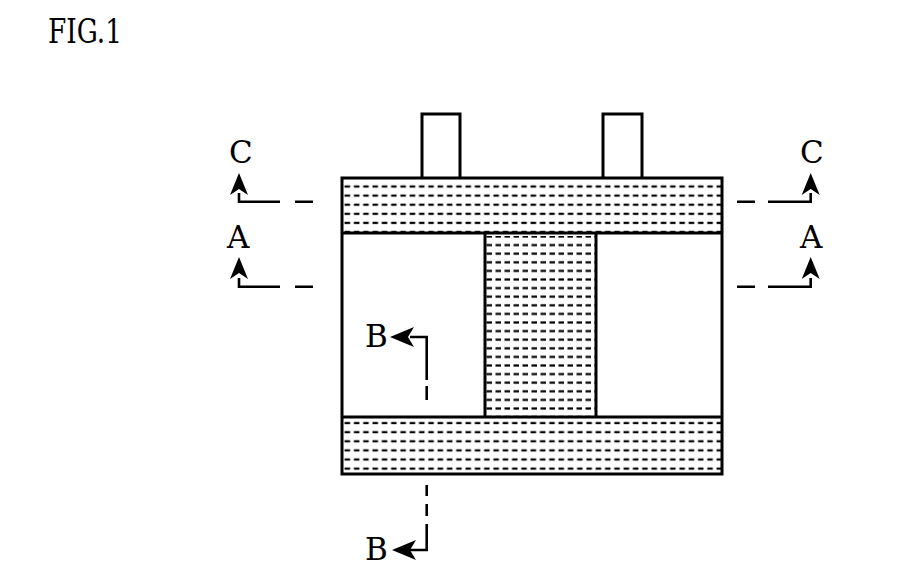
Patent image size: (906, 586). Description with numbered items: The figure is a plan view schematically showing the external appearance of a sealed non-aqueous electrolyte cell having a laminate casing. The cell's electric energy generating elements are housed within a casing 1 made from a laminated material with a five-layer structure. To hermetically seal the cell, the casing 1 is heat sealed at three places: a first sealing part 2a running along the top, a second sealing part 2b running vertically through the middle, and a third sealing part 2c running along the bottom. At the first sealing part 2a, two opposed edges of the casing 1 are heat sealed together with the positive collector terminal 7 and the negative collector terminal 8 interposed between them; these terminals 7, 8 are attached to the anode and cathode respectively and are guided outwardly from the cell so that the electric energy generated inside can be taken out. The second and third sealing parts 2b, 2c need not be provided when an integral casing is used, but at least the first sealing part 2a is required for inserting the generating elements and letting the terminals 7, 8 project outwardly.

The casing 1 is at (723, 363).
The first sealing part 2a is at (388, 198).
The second sealing part 2b is at (558, 292).
The third sealing part 2c is at (537, 443).
The positive collector terminal 7 is at (442, 138).
The negative collector terminal 8 is at (628, 137).